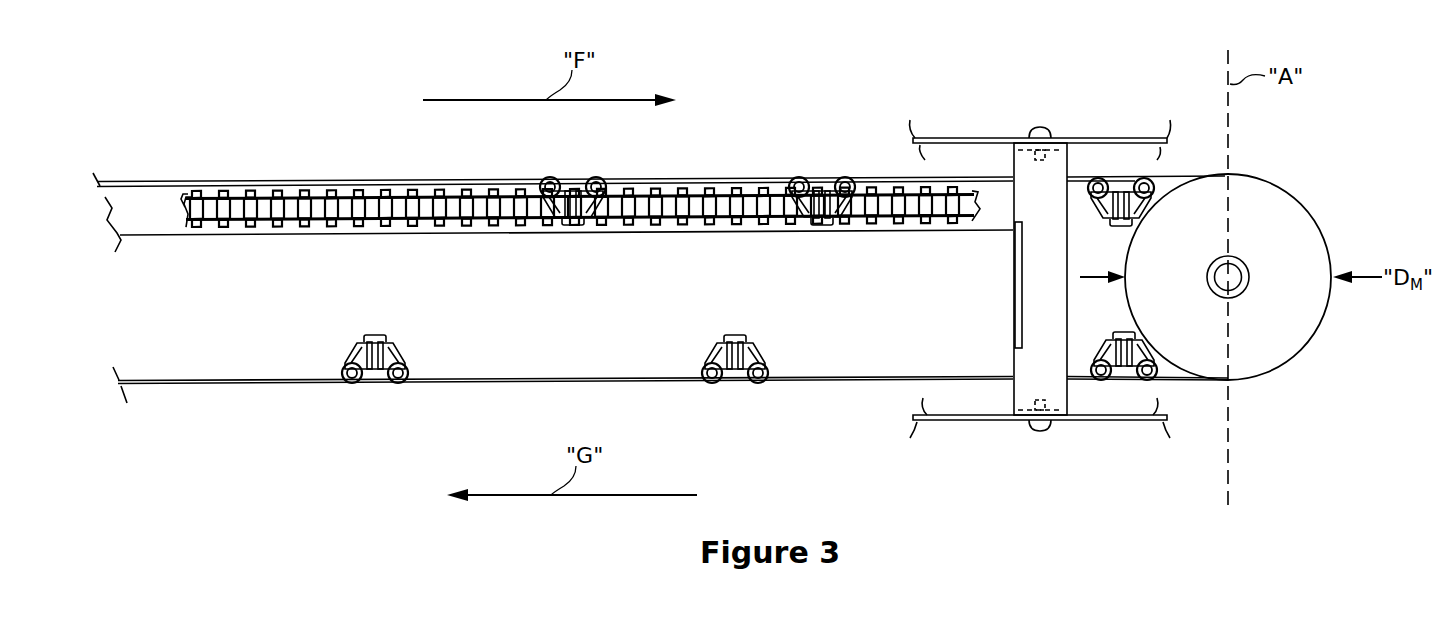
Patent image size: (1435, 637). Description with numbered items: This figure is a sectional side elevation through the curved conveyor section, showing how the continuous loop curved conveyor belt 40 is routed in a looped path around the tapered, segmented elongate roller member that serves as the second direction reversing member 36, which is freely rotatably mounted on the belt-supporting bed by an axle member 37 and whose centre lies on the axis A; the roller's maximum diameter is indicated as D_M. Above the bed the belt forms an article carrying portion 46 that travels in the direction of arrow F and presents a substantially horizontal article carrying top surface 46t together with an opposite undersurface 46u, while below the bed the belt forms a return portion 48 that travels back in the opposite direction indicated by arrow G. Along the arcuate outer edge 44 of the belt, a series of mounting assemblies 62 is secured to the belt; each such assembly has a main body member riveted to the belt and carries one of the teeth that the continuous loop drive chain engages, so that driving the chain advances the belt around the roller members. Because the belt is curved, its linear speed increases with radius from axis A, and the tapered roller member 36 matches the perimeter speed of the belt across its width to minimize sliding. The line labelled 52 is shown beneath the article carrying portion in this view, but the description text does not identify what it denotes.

The second direction reversing member 36 is at (1293, 220).
The axle member 37 is at (1232, 278).
The continuous loop curved conveyor belt 40 is at (368, 181).
The arcuate outer edge 44 is at (878, 178).
The article carrying portion 46 is at (659, 200).
The article carrying top surface 46t is at (201, 181).
The undersurface 46u is at (1005, 182).
The return portion 48 is at (238, 384).
The rail beam bottom flange 52 is at (171, 230).
The mounting assembly 62 is at (561, 249).